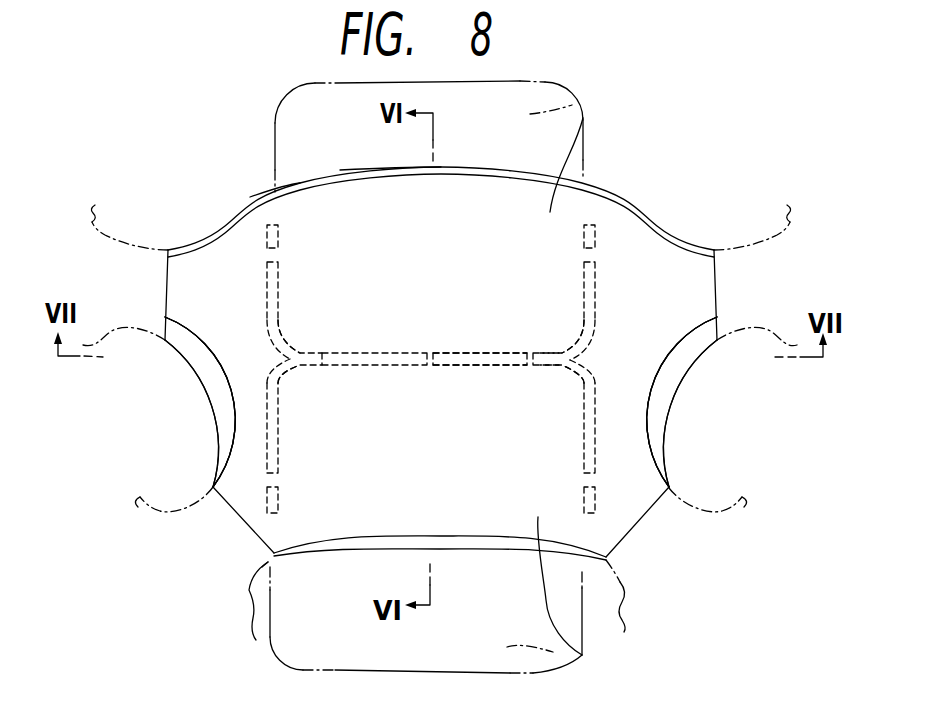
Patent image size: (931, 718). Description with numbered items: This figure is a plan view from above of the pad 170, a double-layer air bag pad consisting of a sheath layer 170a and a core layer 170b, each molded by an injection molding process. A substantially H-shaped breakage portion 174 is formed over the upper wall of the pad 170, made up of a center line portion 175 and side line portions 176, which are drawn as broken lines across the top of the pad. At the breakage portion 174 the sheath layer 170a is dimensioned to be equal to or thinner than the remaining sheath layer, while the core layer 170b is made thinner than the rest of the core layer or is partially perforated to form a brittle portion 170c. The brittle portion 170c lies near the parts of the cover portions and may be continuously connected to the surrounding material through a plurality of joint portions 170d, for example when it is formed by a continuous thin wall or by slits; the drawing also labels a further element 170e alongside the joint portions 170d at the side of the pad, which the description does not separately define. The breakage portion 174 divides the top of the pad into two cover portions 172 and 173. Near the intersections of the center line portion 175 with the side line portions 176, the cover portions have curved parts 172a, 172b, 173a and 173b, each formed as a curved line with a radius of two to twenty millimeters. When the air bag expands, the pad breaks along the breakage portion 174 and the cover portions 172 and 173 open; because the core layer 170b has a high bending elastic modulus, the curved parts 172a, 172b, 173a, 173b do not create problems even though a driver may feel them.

The pad 170 is at (626, 184).
The sheath layer 170a is at (365, 200).
The core layer 170b is at (322, 215).
The brittle portion 170c is at (127, 360).
The joint portions 170d is at (272, 390).
The outer side wall 170e is at (285, 360).
The cover portion 172 is at (582, 121).
The part of the cover portion 172a is at (288, 332).
The part of the cover portion 172b is at (577, 332).
The cover portion 173 is at (582, 655).
The part of the cover portion 173a is at (298, 373).
The part of the cover portion 173b is at (558, 373).
The breakage portion 174 is at (398, 343).
The center line portion 175 is at (410, 367).
The side line portions 176 is at (270, 272).